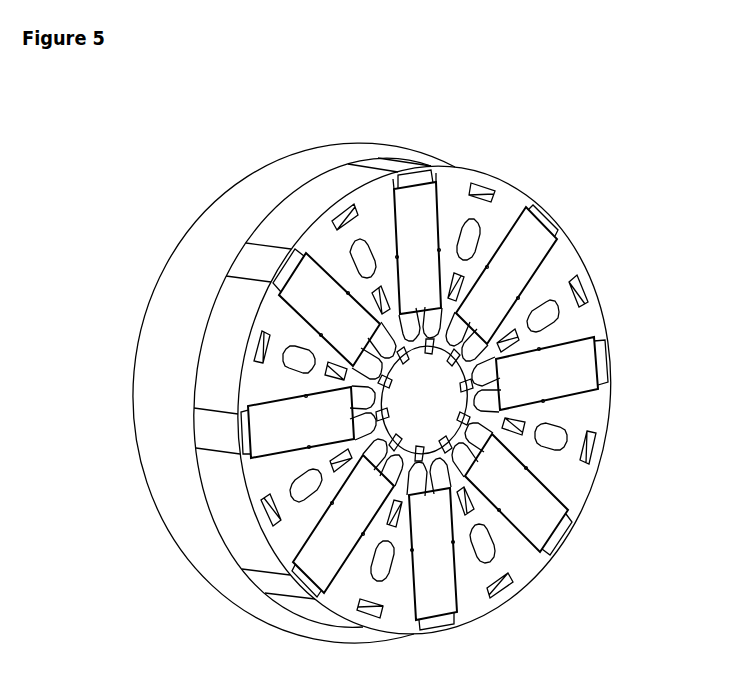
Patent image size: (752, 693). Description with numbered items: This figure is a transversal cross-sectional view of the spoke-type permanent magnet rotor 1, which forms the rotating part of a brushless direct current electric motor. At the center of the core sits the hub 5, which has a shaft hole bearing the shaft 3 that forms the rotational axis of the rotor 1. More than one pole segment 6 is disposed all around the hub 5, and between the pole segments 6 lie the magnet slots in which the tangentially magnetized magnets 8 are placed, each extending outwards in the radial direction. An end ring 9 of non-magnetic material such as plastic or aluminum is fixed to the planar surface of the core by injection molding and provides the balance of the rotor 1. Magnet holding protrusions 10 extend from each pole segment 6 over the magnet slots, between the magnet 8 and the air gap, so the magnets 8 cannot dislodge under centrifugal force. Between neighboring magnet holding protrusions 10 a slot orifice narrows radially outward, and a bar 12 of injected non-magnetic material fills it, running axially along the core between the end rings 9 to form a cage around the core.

The rotor 1 is at (151, 195).
The shaft 3 is at (437, 409).
The hub 5 is at (381, 348).
The pole segment 6 is at (500, 185).
The magnet 8 is at (530, 240).
The end ring 9 is at (272, 170).
The magnet holding protrusion 10 is at (391, 181).
The bar 12 is at (412, 170).